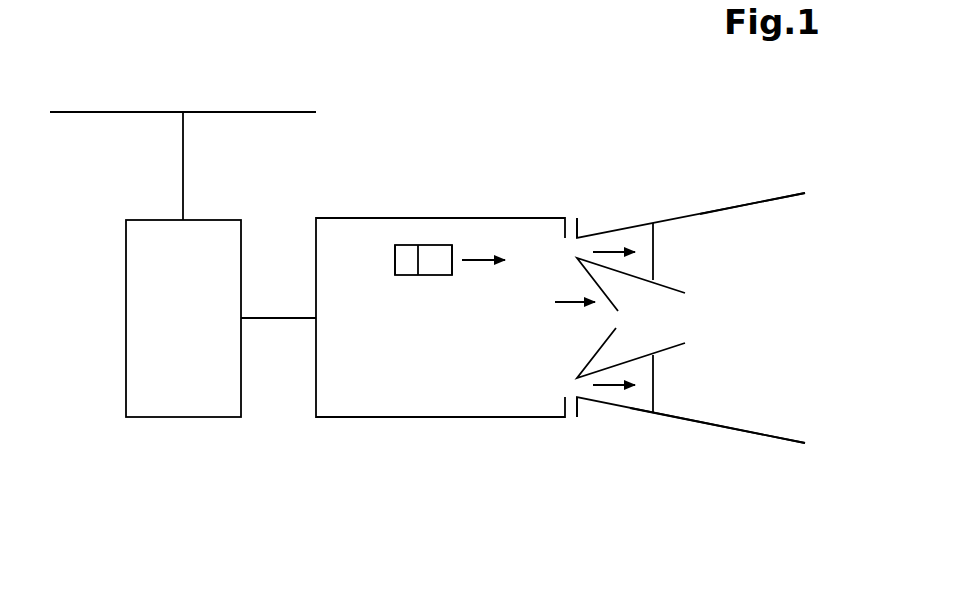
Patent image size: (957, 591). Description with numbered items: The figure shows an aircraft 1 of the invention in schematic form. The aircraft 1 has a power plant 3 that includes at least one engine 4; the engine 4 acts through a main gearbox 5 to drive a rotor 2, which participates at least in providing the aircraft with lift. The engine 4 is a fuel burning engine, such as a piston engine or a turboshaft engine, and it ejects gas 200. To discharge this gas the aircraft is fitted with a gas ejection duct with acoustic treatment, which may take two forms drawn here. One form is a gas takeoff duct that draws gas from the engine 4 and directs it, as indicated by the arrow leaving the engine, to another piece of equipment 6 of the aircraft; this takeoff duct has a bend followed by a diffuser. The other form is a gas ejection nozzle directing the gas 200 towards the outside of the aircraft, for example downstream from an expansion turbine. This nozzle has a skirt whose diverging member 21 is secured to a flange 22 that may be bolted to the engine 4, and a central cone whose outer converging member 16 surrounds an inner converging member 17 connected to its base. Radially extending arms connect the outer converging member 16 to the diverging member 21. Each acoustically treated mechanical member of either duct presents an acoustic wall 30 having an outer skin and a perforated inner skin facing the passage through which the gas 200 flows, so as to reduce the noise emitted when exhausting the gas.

The aircraft 1 is at (537, 125).
The rotor 2 is at (272, 92).
The power plant 3 is at (214, 376).
The engine 4 is at (404, 388).
The main gearbox 5 is at (176, 325).
The piece of equipment 6 is at (474, 258).
The gas 200 is at (565, 300).
The flange 22 is at (583, 235).
The diverging member 21 is at (765, 198).
The outer converging member 16 is at (683, 272).
The acoustic wall 30 is at (637, 358).
The inner converging member 17 is at (578, 340).